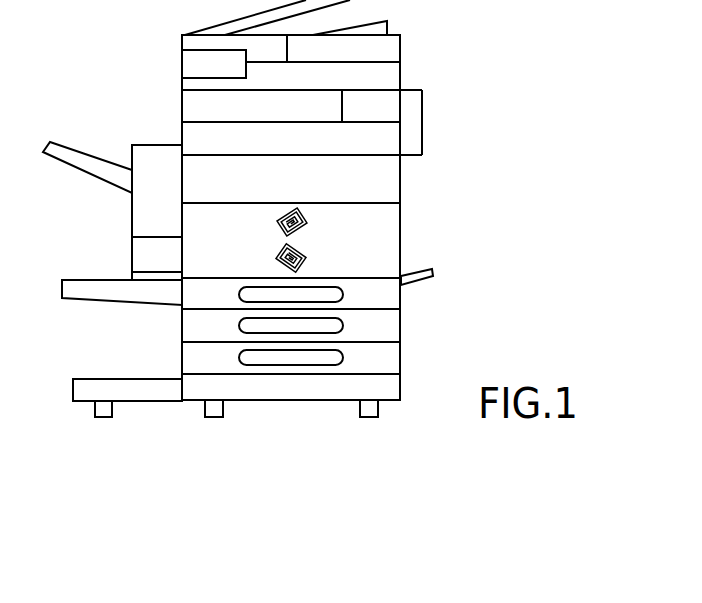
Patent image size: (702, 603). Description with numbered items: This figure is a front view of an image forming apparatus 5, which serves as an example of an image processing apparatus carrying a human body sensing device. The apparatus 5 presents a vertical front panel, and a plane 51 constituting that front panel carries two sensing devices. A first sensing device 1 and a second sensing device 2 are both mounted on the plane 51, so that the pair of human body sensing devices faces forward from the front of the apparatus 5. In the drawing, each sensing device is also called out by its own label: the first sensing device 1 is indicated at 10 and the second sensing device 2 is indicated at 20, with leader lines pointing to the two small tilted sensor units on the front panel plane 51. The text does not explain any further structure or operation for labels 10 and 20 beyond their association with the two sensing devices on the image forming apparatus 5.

The first sensing device 1 is at (308, 229).
The second sensing device 2 is at (310, 250).
The image forming apparatus 5 is at (400, 52).
The plane 51 is at (367, 215).
The first RFID tag 10 is at (290, 212).
The second RFID tag position 20 is at (278, 264).